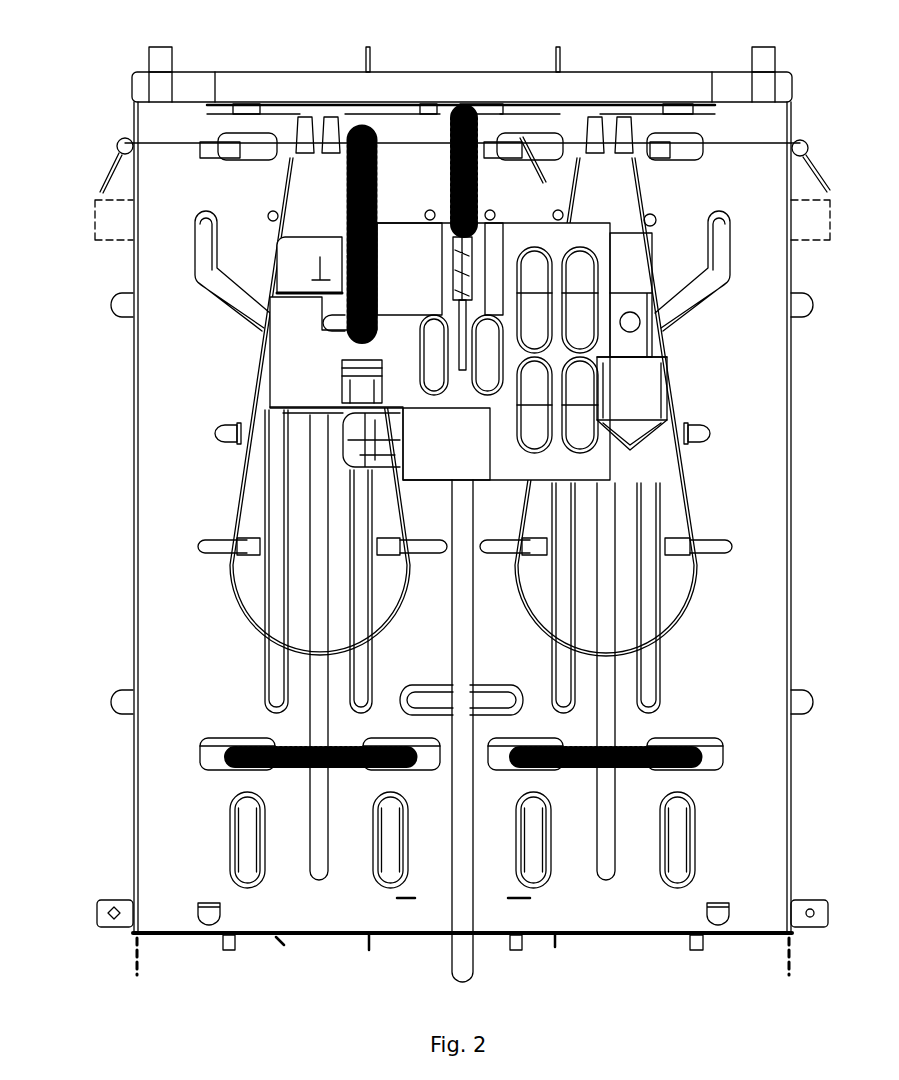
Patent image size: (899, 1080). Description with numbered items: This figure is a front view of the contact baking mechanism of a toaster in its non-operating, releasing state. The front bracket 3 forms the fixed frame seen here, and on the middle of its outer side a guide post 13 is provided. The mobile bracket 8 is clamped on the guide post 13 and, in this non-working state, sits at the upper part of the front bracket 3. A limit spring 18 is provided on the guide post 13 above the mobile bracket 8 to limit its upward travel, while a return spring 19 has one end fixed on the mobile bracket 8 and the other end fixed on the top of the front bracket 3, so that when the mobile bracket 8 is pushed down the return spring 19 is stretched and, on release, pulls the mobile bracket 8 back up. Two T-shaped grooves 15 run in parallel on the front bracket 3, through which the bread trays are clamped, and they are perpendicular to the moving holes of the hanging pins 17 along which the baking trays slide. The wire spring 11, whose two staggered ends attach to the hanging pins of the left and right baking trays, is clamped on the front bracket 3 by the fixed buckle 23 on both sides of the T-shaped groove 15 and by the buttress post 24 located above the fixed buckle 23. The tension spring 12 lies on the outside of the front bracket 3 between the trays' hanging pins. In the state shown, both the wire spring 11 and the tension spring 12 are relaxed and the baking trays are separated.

The front bracket 3 is at (147, 87).
The return spring 19 is at (366, 150).
The limit spring 18 is at (456, 132).
The moving hole of the hanging pin 17 is at (662, 138).
The mobile bracket 8 is at (622, 383).
The buttress post 24 is at (715, 440).
The fixed buckle 23 is at (710, 544).
The T-shaped groove 15 is at (605, 557).
The wire spring 11 is at (673, 640).
The tension spring 12 is at (703, 768).
The guide post 13 is at (467, 960).